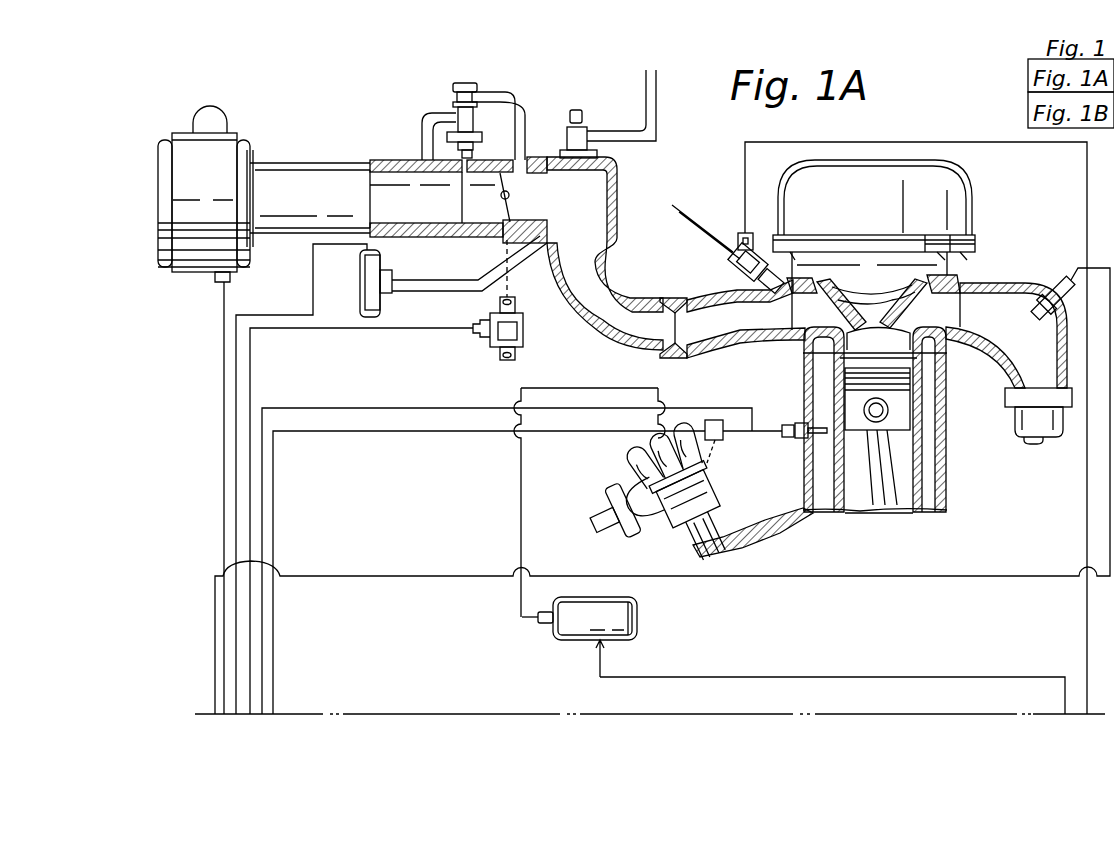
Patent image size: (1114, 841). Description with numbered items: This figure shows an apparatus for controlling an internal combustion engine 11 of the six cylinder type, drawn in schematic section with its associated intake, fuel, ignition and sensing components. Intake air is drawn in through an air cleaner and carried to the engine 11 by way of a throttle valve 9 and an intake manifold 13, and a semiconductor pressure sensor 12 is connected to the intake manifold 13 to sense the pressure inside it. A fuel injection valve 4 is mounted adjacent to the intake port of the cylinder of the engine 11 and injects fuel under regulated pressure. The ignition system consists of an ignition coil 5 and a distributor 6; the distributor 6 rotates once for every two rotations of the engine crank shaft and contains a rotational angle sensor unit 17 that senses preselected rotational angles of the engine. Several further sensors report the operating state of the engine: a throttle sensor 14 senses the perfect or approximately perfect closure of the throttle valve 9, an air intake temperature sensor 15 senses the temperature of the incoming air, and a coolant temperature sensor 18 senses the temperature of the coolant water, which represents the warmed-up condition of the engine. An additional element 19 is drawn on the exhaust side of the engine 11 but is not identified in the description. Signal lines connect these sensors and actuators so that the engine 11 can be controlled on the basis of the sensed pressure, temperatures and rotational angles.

The fuel injection valve 4 is at (740, 232).
The ignition coil 5 is at (640, 612).
The distributor 6 is at (720, 497).
The throttle valve 9 is at (512, 190).
The internal combustion engine 11 is at (955, 160).
The semiconductor pressure sensor 12 is at (383, 310).
The intake manifold 13 is at (617, 170).
The throttle sensor 14 is at (525, 330).
The air intake temperature sensor 15 is at (217, 278).
The rotational angle sensor unit 17 is at (724, 432).
The coolant temperature sensor 18 is at (787, 439).
The exhaust gas sensor 19 is at (1053, 276).